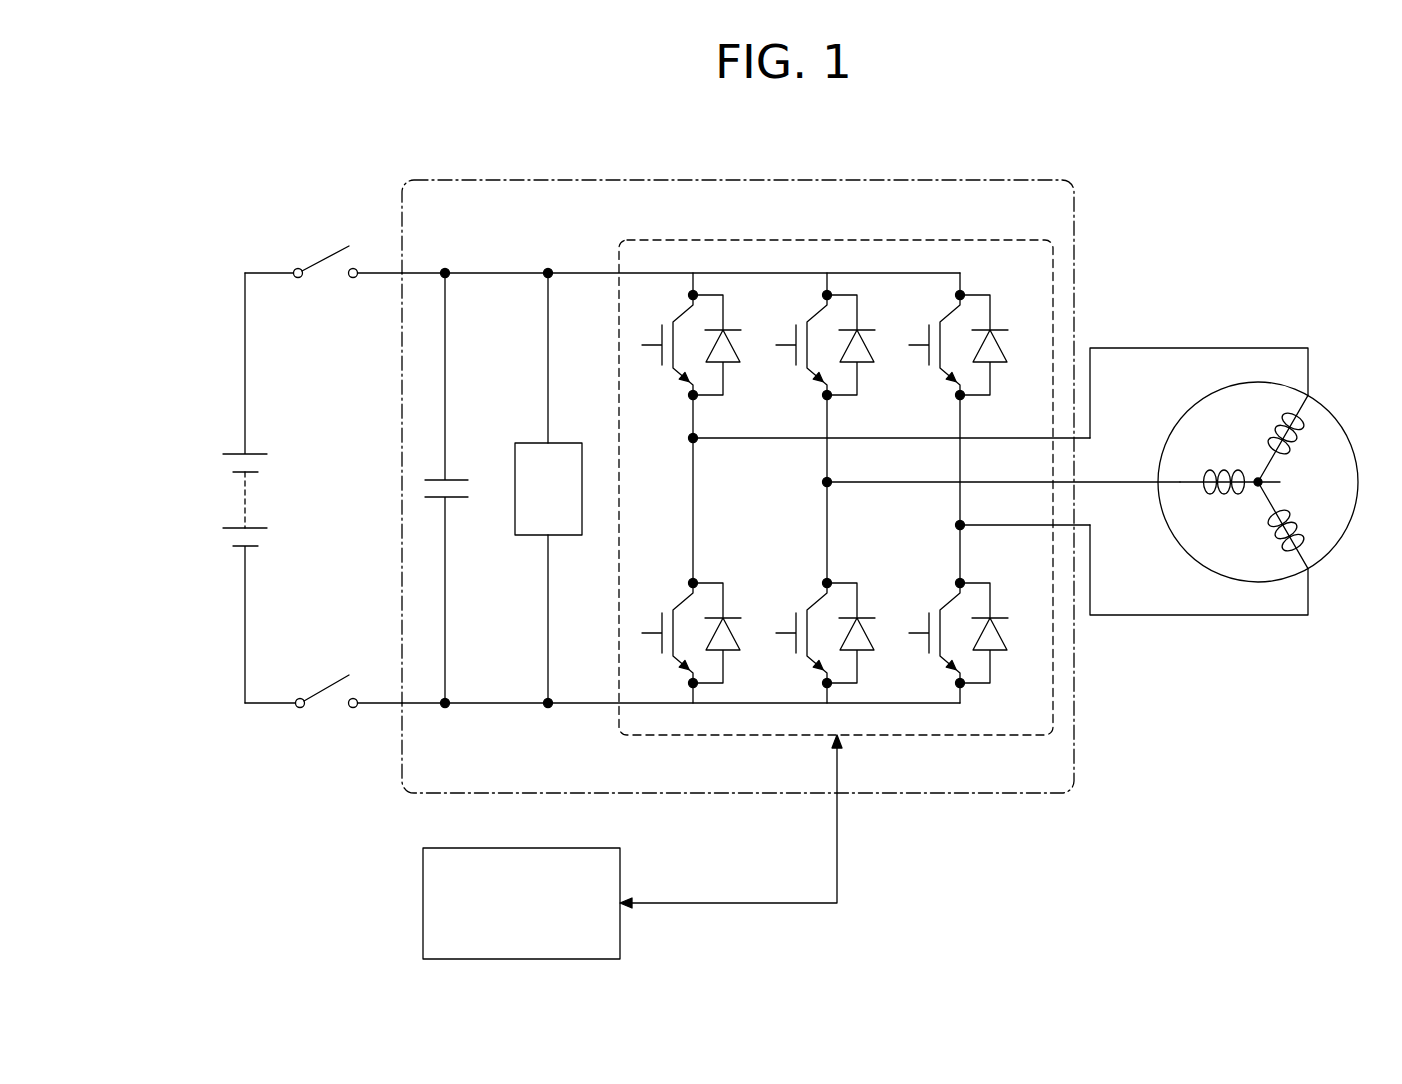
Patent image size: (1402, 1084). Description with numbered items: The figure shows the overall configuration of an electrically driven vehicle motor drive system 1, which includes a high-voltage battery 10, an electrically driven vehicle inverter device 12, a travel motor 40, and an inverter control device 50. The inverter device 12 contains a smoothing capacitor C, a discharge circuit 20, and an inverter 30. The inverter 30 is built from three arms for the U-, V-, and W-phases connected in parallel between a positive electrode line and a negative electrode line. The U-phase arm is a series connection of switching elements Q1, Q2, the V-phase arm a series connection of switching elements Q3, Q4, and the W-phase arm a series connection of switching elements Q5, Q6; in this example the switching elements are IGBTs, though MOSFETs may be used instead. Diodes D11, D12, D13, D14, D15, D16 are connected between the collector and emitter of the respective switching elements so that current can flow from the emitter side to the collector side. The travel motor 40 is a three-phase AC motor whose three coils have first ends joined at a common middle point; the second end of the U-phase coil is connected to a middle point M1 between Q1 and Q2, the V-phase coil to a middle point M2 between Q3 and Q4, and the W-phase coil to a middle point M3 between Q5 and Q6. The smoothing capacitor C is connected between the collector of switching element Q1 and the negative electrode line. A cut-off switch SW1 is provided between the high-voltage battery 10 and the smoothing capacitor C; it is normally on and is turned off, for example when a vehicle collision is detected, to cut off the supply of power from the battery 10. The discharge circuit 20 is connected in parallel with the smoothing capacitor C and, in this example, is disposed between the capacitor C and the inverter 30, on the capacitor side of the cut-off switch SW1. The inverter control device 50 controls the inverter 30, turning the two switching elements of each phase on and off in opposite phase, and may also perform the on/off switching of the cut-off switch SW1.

The motor drive system 1 is at (1208, 106).
The high-voltage battery 10 is at (239, 491).
The electrically driven vehicle inverter device 12 is at (940, 182).
The discharge circuit 20 is at (566, 442).
The inverter 30 is at (838, 241).
The travel motor 40 is at (1333, 410).
The inverter control device 50 is at (553, 848).
The cut-off switch SW1 is at (328, 238).
The smoothing capacitor C is at (459, 488).
The switching element Q1 is at (690, 343).
The switching element Q2 is at (690, 632).
The switching element Q3 is at (822, 343).
The switching element Q4 is at (822, 632).
The switching element Q5 is at (955, 343).
The switching element Q6 is at (955, 632).
The diode D11 is at (750, 385).
The diode D12 is at (751, 671).
The diode D13 is at (886, 385).
The diode D14 is at (886, 671).
The diode D15 is at (1019, 385).
The diode D16 is at (1019, 671).
The middle point M1 is at (689, 436).
The middle point M2 is at (823, 485).
The middle point M3 is at (956, 527).